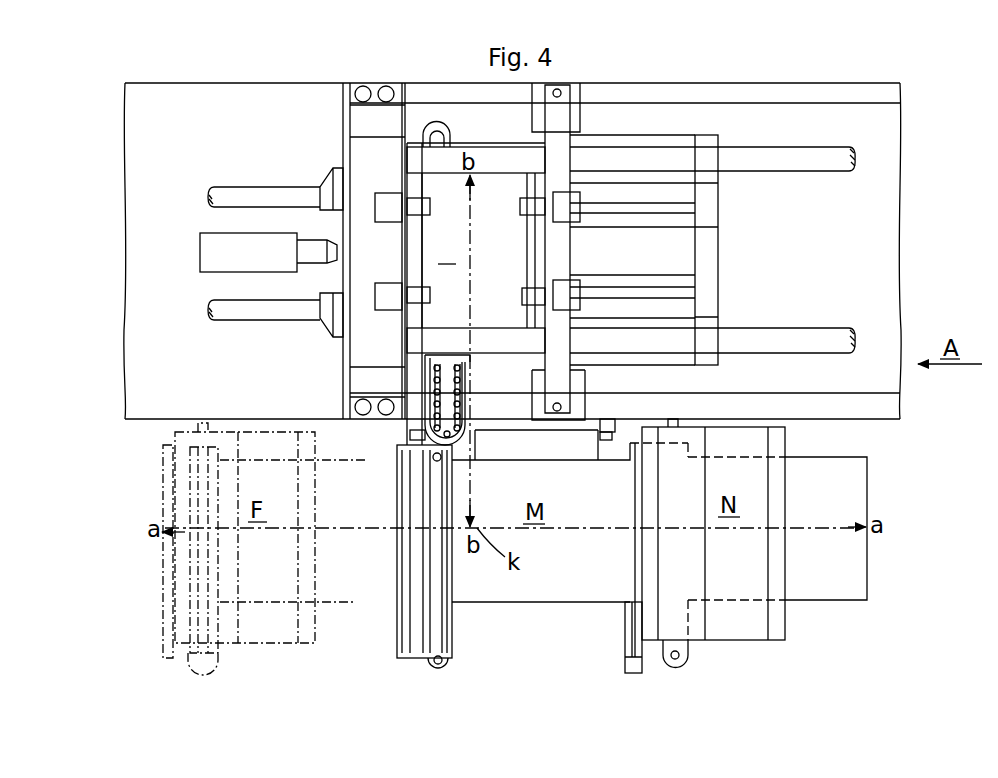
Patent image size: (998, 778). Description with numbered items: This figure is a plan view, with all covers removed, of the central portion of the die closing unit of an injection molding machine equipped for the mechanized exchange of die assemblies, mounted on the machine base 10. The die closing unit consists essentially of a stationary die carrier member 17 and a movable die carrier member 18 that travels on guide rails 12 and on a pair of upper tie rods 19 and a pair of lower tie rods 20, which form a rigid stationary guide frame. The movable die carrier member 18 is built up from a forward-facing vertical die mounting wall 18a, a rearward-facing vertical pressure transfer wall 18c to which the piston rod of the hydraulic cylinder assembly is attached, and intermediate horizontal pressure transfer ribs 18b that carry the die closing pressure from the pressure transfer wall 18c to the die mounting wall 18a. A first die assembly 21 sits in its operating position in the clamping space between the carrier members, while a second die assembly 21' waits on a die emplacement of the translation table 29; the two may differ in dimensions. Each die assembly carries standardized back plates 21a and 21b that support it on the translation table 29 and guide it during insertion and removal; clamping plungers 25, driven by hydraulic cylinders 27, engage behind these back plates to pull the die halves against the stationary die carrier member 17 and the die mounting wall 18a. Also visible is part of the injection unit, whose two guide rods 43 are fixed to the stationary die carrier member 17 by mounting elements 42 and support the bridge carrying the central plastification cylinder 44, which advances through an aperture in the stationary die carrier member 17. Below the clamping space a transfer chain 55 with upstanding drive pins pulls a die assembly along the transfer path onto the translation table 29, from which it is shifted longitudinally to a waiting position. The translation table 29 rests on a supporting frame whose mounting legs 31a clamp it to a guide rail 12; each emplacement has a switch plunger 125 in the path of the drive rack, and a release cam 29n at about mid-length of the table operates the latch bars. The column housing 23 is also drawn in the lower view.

The machine base 10 is at (905, 160).
The guide rails 12 is at (885, 93).
The stationary die carrier member 17 is at (341, 349).
The die assembly 21 is at (377, 251).
The back plate 21a is at (418, 315).
The back plate 21b is at (540, 273).
The second die assembly 21' is at (470, 549).
The clamping plungers 25 is at (430, 207).
The hydraulic cylinders 27 is at (390, 204).
The movable die carrier member 18 is at (689, 258).
The die mounting wall 18a is at (557, 163).
The pressure transfer ribs 18b is at (660, 212).
The pressure transfer wall 18c is at (708, 172).
The upper tie rods 19 is at (810, 160).
The lower tie rods 20 is at (812, 337).
The mounting elements 42 is at (342, 170).
The guide rods 43 is at (237, 190).
The plastification cylinder 44 is at (220, 250).
The mounting legs 31a is at (603, 423).
The transfer chain 55 is at (463, 433).
The column housing 23 is at (430, 642).
The switch plunger 125 is at (660, 657).
The translation table 29 is at (869, 468).
The release cam 29n is at (636, 668).